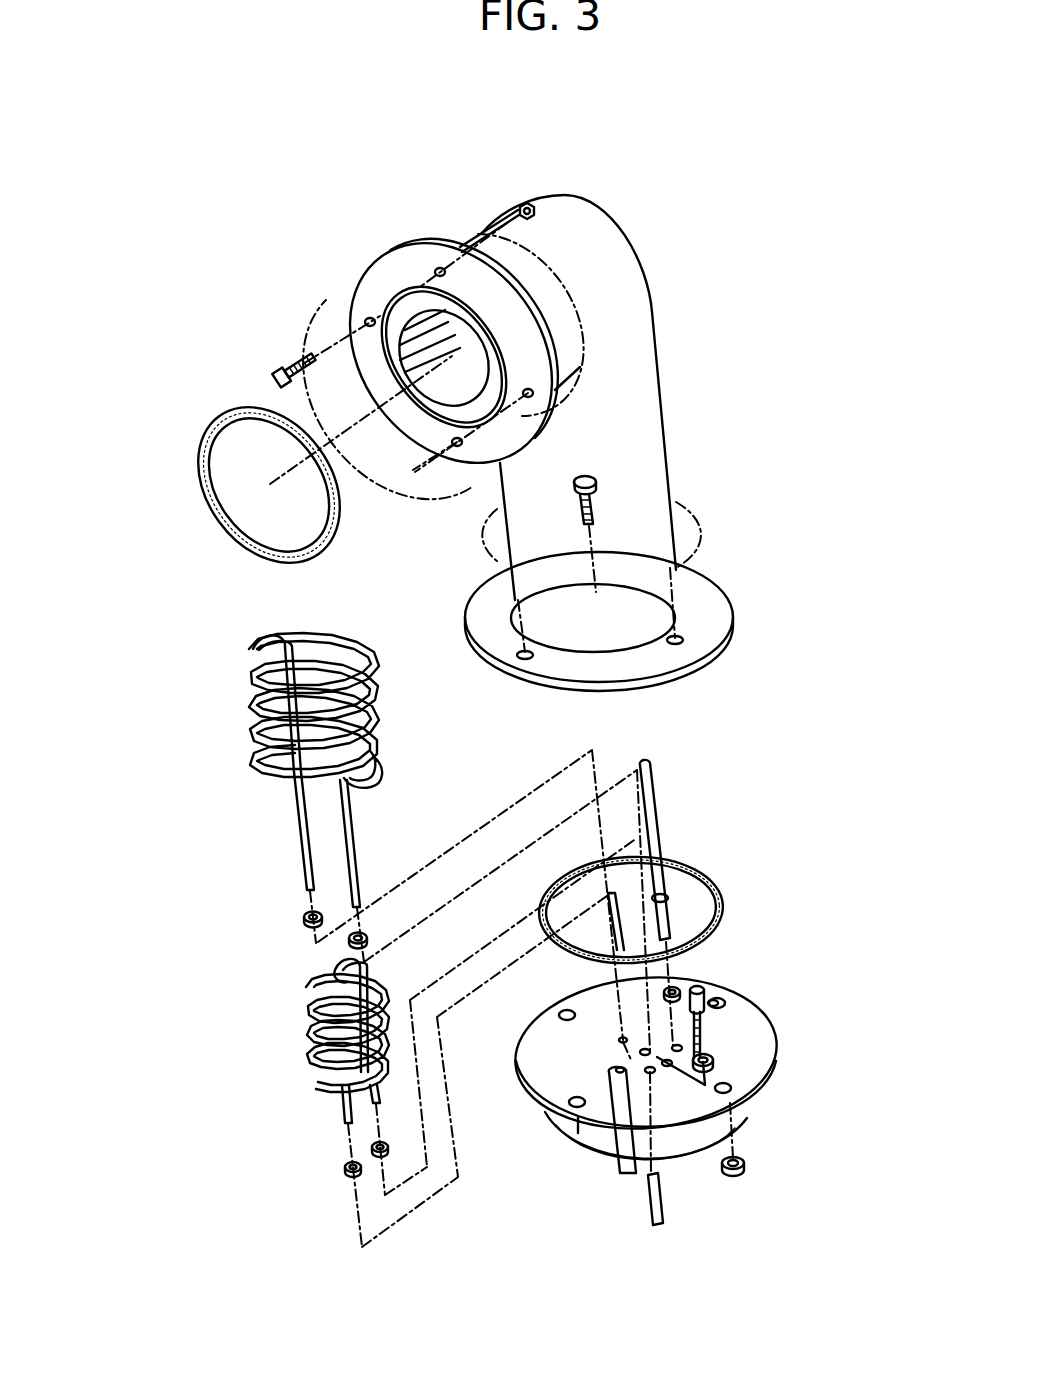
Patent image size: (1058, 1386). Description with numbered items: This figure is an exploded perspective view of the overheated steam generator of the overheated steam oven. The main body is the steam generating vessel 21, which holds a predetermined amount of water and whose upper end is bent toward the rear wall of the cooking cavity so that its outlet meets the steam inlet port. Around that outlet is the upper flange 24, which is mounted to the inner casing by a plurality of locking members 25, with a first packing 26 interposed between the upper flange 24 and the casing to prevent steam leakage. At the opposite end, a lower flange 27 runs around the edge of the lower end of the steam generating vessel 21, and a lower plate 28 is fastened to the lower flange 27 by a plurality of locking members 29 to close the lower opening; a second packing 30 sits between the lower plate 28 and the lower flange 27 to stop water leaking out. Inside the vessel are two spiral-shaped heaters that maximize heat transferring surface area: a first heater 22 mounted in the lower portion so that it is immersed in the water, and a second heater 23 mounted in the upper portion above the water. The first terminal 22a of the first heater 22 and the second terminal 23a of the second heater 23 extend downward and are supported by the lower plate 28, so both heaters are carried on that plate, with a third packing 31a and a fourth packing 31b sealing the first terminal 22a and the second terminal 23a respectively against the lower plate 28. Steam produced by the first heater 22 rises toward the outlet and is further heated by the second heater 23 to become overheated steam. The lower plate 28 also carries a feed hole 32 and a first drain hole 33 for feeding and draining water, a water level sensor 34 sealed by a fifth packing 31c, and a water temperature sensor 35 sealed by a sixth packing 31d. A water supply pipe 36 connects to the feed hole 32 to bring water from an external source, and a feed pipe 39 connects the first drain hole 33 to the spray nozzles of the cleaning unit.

The steam generating vessel 21 is at (612, 226).
The upper flange 24 is at (380, 270).
The locking members 25 is at (298, 366).
The first packing 26 is at (202, 490).
The locking members 29 is at (597, 503).
The lower flange 27 is at (697, 578).
The second heater 23 is at (260, 732).
The second terminal 23a is at (350, 840).
The water level sensor 34 is at (657, 807).
The second packing 30 is at (707, 880).
The fourth packing 31b is at (303, 916).
The fifth packing 31c is at (674, 988).
The water temperature sensor 35 is at (702, 988).
The lower plate 28 is at (760, 1027).
The feed hole 32 is at (619, 1040).
The first drain hole 33 is at (616, 1070).
The sixth packing 31d is at (714, 1060).
The first heater 22 is at (302, 1040).
The first terminal 22a is at (342, 1120).
The third packing 31a is at (348, 1170).
The feed pipe 39 is at (617, 1167).
The water supply pipe 36 is at (663, 1193).